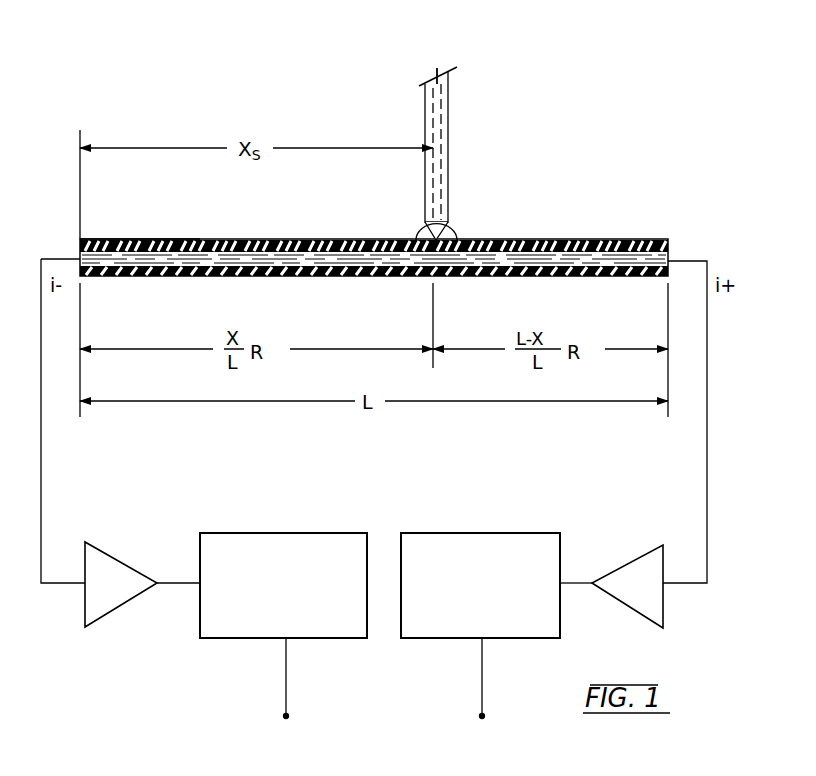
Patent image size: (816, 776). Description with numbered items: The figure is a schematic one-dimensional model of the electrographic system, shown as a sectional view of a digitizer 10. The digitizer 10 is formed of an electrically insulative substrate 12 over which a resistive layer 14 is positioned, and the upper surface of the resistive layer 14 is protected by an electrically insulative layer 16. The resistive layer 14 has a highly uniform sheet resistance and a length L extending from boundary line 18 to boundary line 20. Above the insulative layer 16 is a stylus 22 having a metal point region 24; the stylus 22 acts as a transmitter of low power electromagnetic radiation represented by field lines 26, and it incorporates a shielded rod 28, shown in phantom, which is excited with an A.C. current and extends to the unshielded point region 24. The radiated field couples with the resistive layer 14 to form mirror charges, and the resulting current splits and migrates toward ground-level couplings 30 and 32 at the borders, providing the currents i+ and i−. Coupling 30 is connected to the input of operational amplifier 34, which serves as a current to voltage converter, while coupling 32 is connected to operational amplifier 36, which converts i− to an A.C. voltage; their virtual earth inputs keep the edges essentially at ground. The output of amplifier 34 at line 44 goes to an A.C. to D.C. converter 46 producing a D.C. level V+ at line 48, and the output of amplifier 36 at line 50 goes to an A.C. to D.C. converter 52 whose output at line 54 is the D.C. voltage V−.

The digitizer 10 is at (634, 214).
The electrically insulative substrate 12 is at (272, 277).
The resistive layer 14 is at (80, 254).
The electrically insulative layer 16 is at (94, 239).
The boundary line 18 is at (81, 306).
The boundary line 20 is at (668, 305).
The stylus 22 is at (448, 109).
The point region 24 is at (447, 223).
The field lines 26 is at (456, 240).
The shielded rod 28 is at (437, 80).
The coupling 30 is at (707, 466).
The coupling 32 is at (41, 497).
The operational amplifier 34 is at (633, 562).
The operational amplifier 36 is at (115, 559).
The line 44 is at (580, 584).
The A.C. to D.C. converter 46 is at (483, 533).
The line 48 is at (483, 690).
The line 50 is at (180, 584).
The A.C. to D.C. converter 52 is at (285, 533).
The line 54 is at (287, 690).